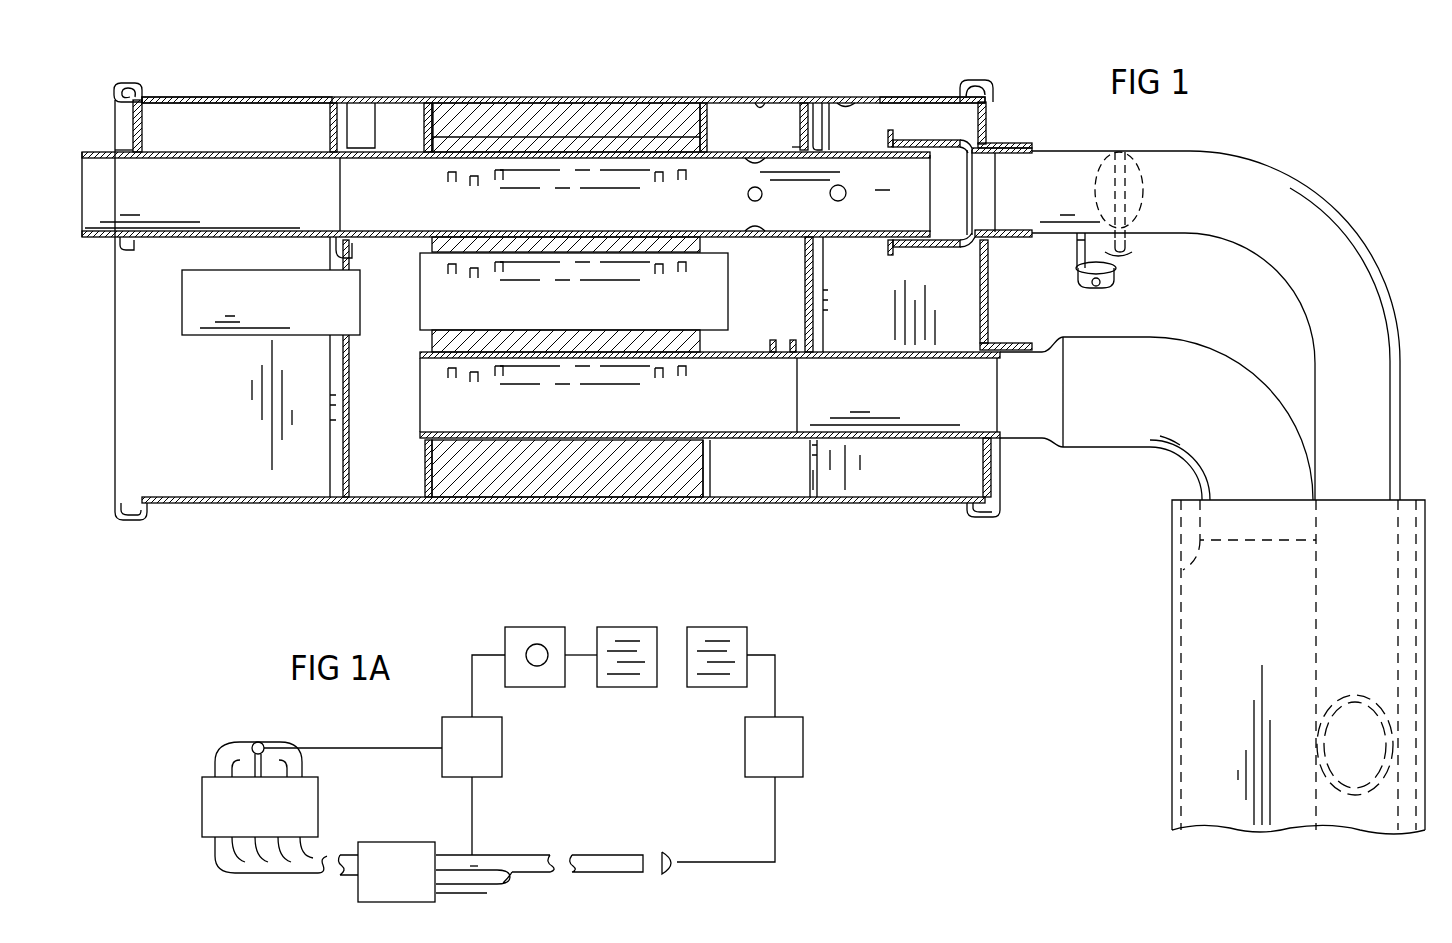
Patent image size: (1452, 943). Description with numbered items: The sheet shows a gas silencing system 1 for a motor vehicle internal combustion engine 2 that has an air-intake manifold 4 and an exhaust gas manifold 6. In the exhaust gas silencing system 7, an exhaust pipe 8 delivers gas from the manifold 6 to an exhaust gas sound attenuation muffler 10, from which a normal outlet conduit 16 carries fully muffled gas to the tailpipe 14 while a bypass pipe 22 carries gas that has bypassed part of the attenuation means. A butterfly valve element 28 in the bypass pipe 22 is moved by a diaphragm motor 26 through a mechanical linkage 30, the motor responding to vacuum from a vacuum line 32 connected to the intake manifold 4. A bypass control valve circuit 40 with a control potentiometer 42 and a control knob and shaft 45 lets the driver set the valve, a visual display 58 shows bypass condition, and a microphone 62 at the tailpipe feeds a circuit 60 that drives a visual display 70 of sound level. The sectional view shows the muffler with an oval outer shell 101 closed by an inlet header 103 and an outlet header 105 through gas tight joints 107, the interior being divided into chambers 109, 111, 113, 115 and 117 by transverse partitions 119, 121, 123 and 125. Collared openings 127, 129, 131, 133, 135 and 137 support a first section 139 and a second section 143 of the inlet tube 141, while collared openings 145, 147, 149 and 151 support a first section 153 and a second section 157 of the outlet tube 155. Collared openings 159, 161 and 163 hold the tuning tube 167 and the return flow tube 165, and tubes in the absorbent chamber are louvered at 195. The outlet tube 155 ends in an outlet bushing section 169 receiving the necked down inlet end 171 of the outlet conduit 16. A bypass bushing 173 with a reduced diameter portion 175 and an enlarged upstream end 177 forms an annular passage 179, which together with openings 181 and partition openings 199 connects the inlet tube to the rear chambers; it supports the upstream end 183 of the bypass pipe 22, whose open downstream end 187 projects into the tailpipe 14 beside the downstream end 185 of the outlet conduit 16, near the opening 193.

In FIG. 1A, the gas silencing system 1 is at (436, 676).
In FIG. 1A, the internal combustion engine 2 is at (270, 819).
In FIG. 1A, the air-intake manifold 4 is at (240, 745).
In FIG. 1A, the exhaust gas manifold 6 is at (258, 862).
In FIG. 1A, the exhaust gas silencing system 7 is at (428, 822).
In FIG. 1A, the exhaust pipe 8 is at (343, 860).
In FIG. 1, the exhaust gas sound attenuation muffler 10 is at (588, 76).
In FIG. 1A, the exhaust gas sound attenuation muffler 10 is at (411, 884).
In FIG. 1, the tailpipe 14 is at (1197, 612).
In FIG. 1A, the tailpipe 14 is at (603, 865).
In FIG. 1, the outlet conduit 16 is at (1142, 404).
In FIG. 1A, the outlet conduit 16 is at (487, 886).
In FIG. 1, the bypass pipe 22 is at (1343, 262).
In FIG. 1A, the bypass pipe 22 is at (458, 855).
In FIG. 1, the diaphragm motor 26 is at (1112, 277).
In FIG. 1, the butterfly valve element 28 is at (1150, 152).
In FIG. 1A, the butterfly valve element 28 is at (472, 866).
In FIG. 1, the mechanical linkage 30 is at (1125, 258).
In FIG. 1A, the vacuum line 32 is at (390, 745).
In FIG. 1A, the bypass control valve circuit 40 is at (488, 761).
In FIG. 1A, the control potentiometer 42 is at (518, 640).
In FIG. 1A, the control knob and shaft 45 is at (537, 650).
In FIG. 1A, the visual display 58 is at (613, 633).
In FIG. 1A, the circuit 60 is at (790, 761).
In FIG. 1A, the microphone 62 is at (677, 866).
In FIG. 1A, the visual display 70 is at (740, 642).
In FIG. 1, the outer shell 101 is at (290, 98).
In FIG. 1, the inlet header 103 is at (130, 127).
In FIG. 1, the outlet header 105 is at (990, 110).
In FIG. 1, the gas tight joints 107 is at (130, 88).
In FIG. 1, the inner chamber 109 is at (178, 104).
In FIG. 1, the inner chamber 111 is at (372, 103).
In FIG. 1, the inner chamber 113 is at (478, 102).
In FIG. 1, the inner chamber 115 is at (792, 147).
In FIG. 1, the inner chamber 117 is at (905, 97).
In FIG. 1, the transverse partition 119 is at (345, 105).
In FIG. 1, the transverse partition 121 is at (440, 98).
In FIG. 1, the transverse partition 123 is at (712, 102).
In FIG. 1, the transverse partition 125 is at (845, 100).
In FIG. 1, the collared opening 127 is at (127, 247).
In FIG. 1, the collared opening 129 is at (350, 252).
In FIG. 1, the collared opening 131 is at (420, 133).
In FIG. 1, the collared opening 133 is at (763, 103).
In FIG. 1, the collared opening 135 is at (803, 100).
In FIG. 1, the collared opening 137 is at (998, 143).
In FIG. 1, the first section of inlet tube 139 is at (225, 152).
In FIG. 1, the inlet tube 141 is at (301, 209).
In FIG. 1, the second section of inlet tube 143 is at (400, 212).
In FIG. 1, the collared opening 145 is at (998, 343).
In FIG. 1, the collared opening 147 is at (790, 348).
In FIG. 1, the collared opening 149 is at (732, 343).
In FIG. 1, the collared opening 151 is at (423, 448).
In FIG. 1, the first section of outlet tube 153 is at (860, 345).
In FIG. 1, the outlet tube 155 is at (861, 402).
In FIG. 1, the second section of outlet tube 157 is at (750, 420).
In FIG. 1, the collared opening 159 is at (352, 343).
In FIG. 1, the collared opening 161 is at (420, 337).
In FIG. 1, the collared opening 163 is at (728, 248).
In FIG. 1, the return flow tube 165 is at (601, 312).
In FIG. 1, the tuning tube 167 is at (285, 314).
In FIG. 1, the outlet bushing section 169 is at (1040, 345).
In FIG. 1, the necked down inlet end 171 is at (1040, 420).
In FIG. 1, the bypass bushing 173 is at (964, 250).
In FIG. 1, the reduced diameter portion 175 is at (1018, 240).
In FIG. 1, the enlarged upstream end 177 is at (927, 245).
In FIG. 1, the annular passage 179 is at (897, 250).
In FIG. 1, the openings 181 is at (845, 200).
In FIG. 1, the upstream end of bypass conduit 183 is at (1050, 172).
In FIG. 1, the downstream end of outlet conduit 185 is at (1177, 573).
In FIG. 1, the open downstream end of bypass conduit 187 is at (1353, 793).
In FIG. 1, the opening 193 is at (770, 189).
In FIG. 1, the louvers 195 is at (678, 182).
In FIG. 1, the openings 199 is at (804, 292).